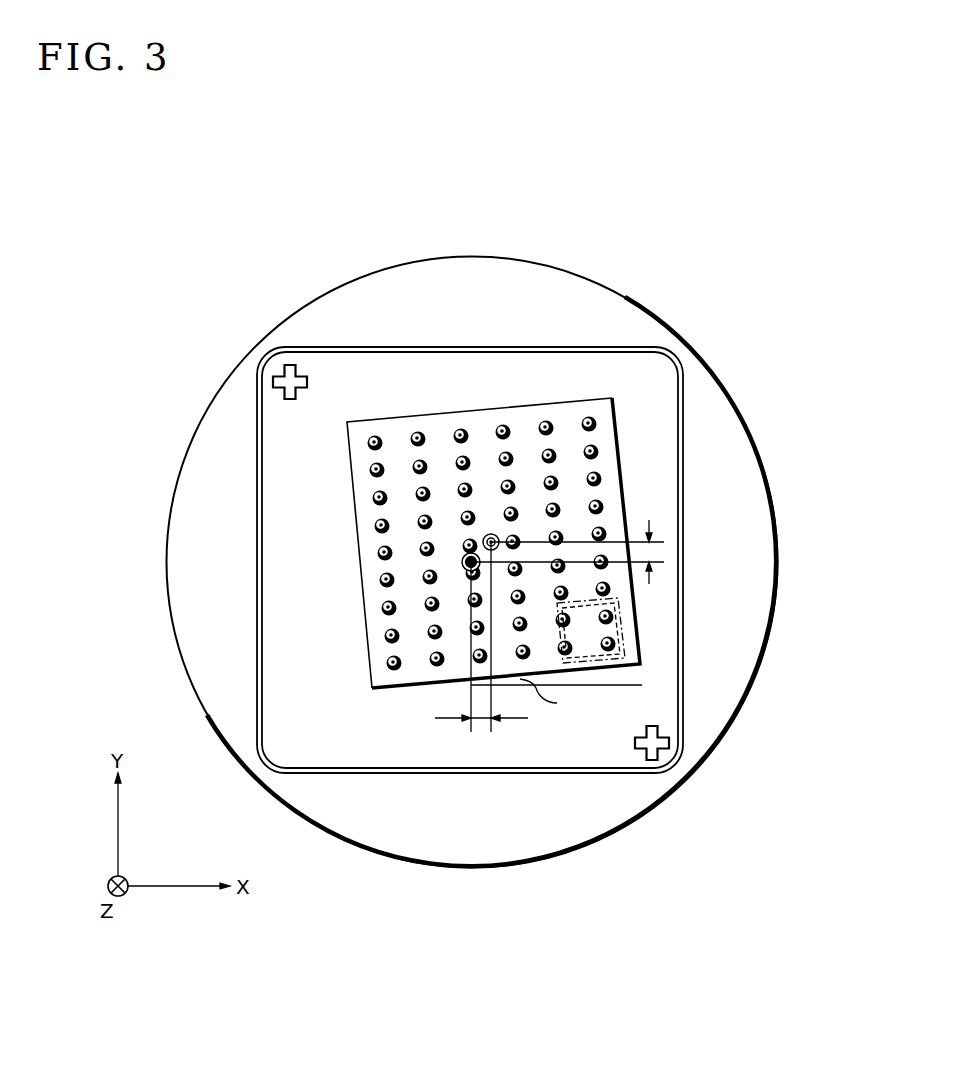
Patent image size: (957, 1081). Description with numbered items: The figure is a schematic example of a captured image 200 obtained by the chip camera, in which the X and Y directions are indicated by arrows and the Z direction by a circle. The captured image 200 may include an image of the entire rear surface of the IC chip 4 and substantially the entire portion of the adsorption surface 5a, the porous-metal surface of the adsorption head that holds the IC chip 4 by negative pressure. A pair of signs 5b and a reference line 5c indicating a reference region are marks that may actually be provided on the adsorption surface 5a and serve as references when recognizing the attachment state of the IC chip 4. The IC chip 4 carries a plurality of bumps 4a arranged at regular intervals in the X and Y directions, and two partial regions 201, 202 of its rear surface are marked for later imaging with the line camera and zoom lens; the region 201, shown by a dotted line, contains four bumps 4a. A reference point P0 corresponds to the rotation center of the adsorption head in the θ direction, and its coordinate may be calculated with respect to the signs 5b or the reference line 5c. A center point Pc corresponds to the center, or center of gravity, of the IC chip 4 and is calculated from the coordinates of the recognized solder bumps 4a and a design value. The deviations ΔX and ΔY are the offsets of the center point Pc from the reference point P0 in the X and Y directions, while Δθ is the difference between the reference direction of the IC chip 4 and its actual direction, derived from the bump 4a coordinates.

The captured image 200 is at (787, 650).
The adsorption surface 5a is at (602, 300).
The signs 5b is at (283, 373).
The reference line 5c is at (257, 480).
The IC chip 4 is at (617, 440).
The bumps 4a is at (590, 418).
The partial region 202 is at (624, 628).
The partial region 201 is at (621, 648).
The center point Pc is at (483, 540).
The reference point P0 is at (466, 563).